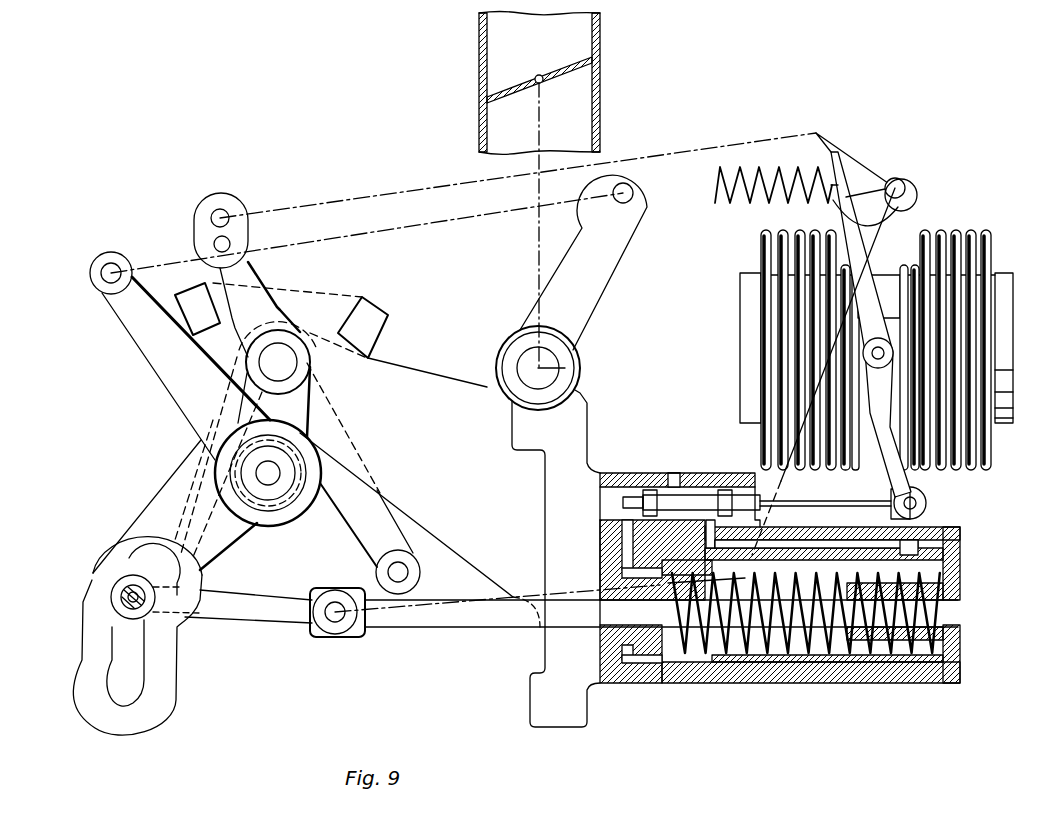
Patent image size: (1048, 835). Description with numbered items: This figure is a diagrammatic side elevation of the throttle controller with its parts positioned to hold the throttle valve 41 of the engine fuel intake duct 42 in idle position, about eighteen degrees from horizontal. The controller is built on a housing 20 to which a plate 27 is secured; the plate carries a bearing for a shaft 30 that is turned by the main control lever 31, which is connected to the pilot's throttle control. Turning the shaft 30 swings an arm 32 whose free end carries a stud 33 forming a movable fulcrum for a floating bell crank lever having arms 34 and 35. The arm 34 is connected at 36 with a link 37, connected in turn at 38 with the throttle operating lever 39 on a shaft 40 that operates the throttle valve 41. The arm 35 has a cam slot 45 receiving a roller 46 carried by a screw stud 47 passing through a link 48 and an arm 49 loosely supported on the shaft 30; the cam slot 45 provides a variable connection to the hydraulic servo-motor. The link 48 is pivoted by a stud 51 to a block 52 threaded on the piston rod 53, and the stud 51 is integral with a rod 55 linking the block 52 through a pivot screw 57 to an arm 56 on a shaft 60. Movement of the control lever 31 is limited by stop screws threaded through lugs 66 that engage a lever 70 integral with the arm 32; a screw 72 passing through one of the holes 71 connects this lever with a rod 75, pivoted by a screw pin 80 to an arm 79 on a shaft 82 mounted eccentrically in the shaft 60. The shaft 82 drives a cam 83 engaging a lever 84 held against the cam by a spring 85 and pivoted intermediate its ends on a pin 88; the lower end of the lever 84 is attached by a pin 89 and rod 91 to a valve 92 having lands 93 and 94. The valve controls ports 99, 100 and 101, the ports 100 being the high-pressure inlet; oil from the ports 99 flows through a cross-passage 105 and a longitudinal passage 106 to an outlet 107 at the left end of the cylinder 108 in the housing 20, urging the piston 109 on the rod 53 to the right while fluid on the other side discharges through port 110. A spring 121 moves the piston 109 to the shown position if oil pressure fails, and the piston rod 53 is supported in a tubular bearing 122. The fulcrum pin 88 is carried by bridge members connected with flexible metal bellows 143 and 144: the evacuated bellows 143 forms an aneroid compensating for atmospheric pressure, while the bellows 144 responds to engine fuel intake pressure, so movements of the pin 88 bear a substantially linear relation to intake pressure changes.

The housing 20 is at (657, 683).
The plate 27 is at (530, 695).
The shaft 30 is at (278, 362).
The main control lever 31 is at (350, 543).
The arm 32 is at (312, 405).
The stud 33 is at (268, 480).
The arm 34 is at (135, 340).
The arm 35 is at (182, 503).
The connection 36 is at (90, 273).
The link 37 is at (425, 228).
The connection 38 is at (635, 190).
The lever 39 is at (606, 275).
The shaft 40 is at (538, 262).
The throttle valve 41 is at (510, 95).
The engine fuel intake duct 42 is at (479, 24).
The cam slot 45 is at (110, 657).
The roller 46 is at (112, 597).
The screw stud 47 is at (128, 588).
The link 48 is at (248, 622).
The arm 49 is at (188, 452).
The stud 51 is at (328, 625).
The block 52 is at (360, 637).
The piston rod 53 is at (455, 630).
The rod 55 is at (532, 585).
The arm 56 is at (782, 488).
The pivot screw 57 is at (770, 573).
The shaft 60 is at (918, 196).
The lugs 66 is at (194, 290).
The lever 70 is at (262, 282).
The holes 71 is at (230, 244).
The screw 72 is at (226, 210).
The rod 75 is at (381, 196).
The arm 79 is at (866, 165).
The screw pin 80 is at (816, 133).
The shaft 82 is at (904, 185).
The cam 83 is at (865, 196).
The lever 84 is at (845, 160).
The spring 85 is at (790, 157).
The pin 88 is at (878, 360).
The pin 89 is at (926, 503).
The rod 91 is at (825, 492).
The valve 92 is at (692, 494).
The land 93 is at (726, 490).
The land 94 is at (650, 490).
The ports 99 is at (716, 530).
The ports 100 is at (674, 473).
The ports 101 is at (600, 510).
The cross-passage 105 is at (771, 528).
The longitudinal passage 106 is at (840, 548).
The outlet 107 is at (918, 548).
The cylinder 108 is at (755, 662).
The piston 109 is at (700, 683).
The port 110 is at (615, 540).
The spring 121 is at (812, 660).
The tubular bearing 122 is at (900, 640).
The flexible metal bellows 143 is at (1000, 243).
The flexible metal bellows 144 is at (761, 237).